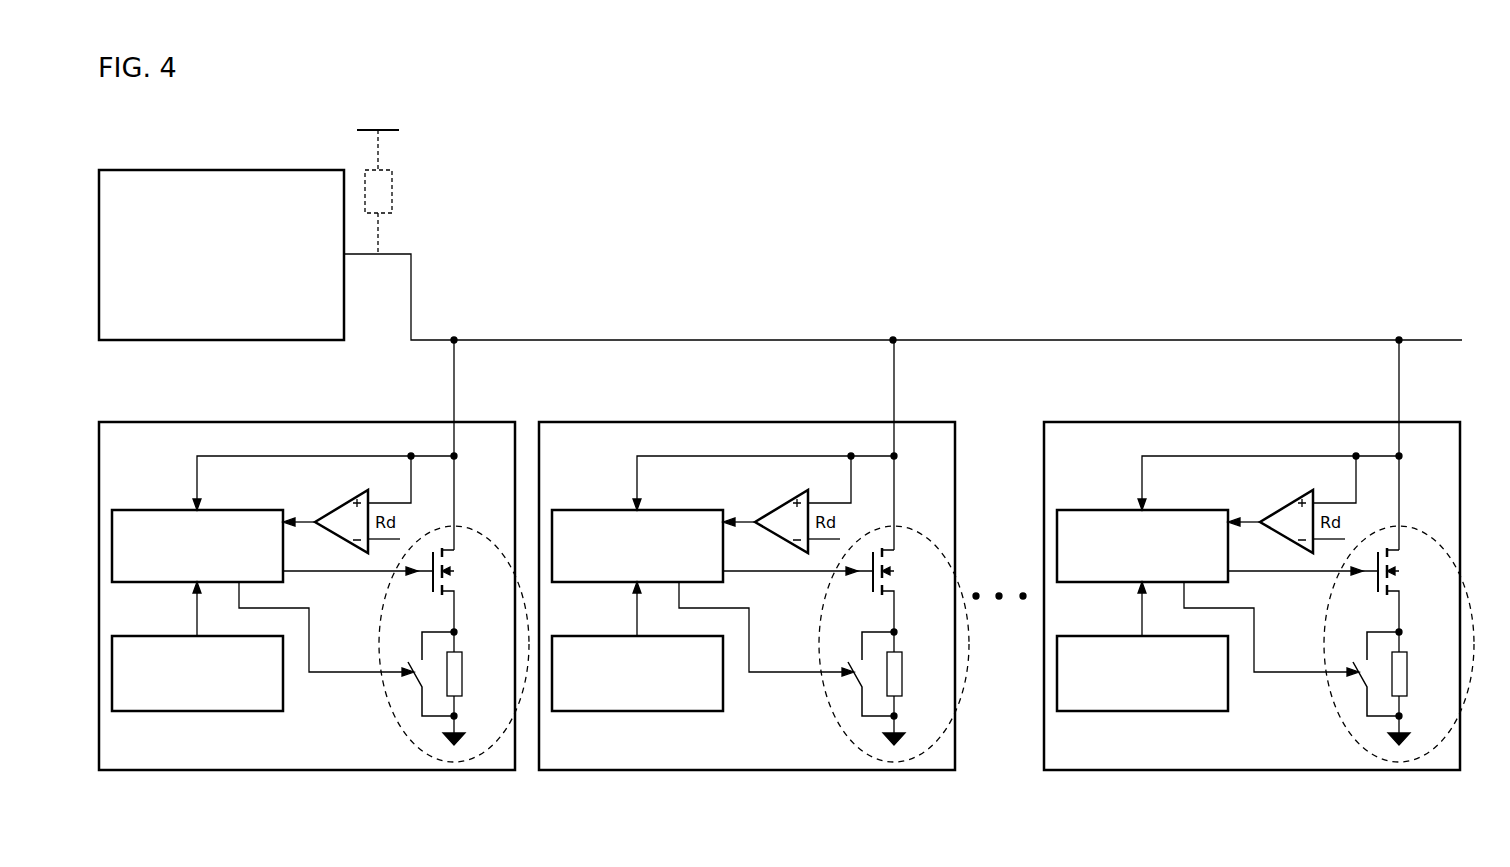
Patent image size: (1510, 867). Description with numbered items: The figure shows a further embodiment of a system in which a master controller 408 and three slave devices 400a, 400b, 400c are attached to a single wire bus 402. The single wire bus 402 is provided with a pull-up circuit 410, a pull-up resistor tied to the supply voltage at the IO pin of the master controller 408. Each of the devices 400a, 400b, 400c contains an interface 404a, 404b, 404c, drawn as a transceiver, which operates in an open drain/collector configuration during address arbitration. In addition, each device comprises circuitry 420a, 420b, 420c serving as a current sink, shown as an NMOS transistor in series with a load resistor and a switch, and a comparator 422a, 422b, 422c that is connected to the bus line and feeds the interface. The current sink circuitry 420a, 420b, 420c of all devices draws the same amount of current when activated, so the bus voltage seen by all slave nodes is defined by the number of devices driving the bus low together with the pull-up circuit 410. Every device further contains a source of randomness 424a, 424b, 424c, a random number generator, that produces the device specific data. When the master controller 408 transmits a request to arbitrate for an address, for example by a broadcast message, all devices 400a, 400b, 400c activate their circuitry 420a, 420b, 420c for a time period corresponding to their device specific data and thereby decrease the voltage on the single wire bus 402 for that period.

The device 400a is at (308, 771).
The device 400b is at (747, 626).
The device 400c is at (1252, 626).
The single wire bus 402 is at (1163, 340).
The interface 404a is at (222, 510).
The interface 404b is at (658, 525).
The interface 404c is at (1162, 525).
The master controller 408 is at (221, 170).
The pull-up circuit 410 is at (412, 146).
The circuitry 420a is at (447, 763).
The circuitry 420b is at (893, 678).
The circuitry 420c is at (1398, 678).
The comparator 422a is at (346, 499).
The comparator 422b is at (786, 464).
The comparator 422c is at (1290, 464).
The source of randomness 424a is at (226, 711).
The source of randomness 424b is at (662, 692).
The source of randomness 424c is at (1166, 692).